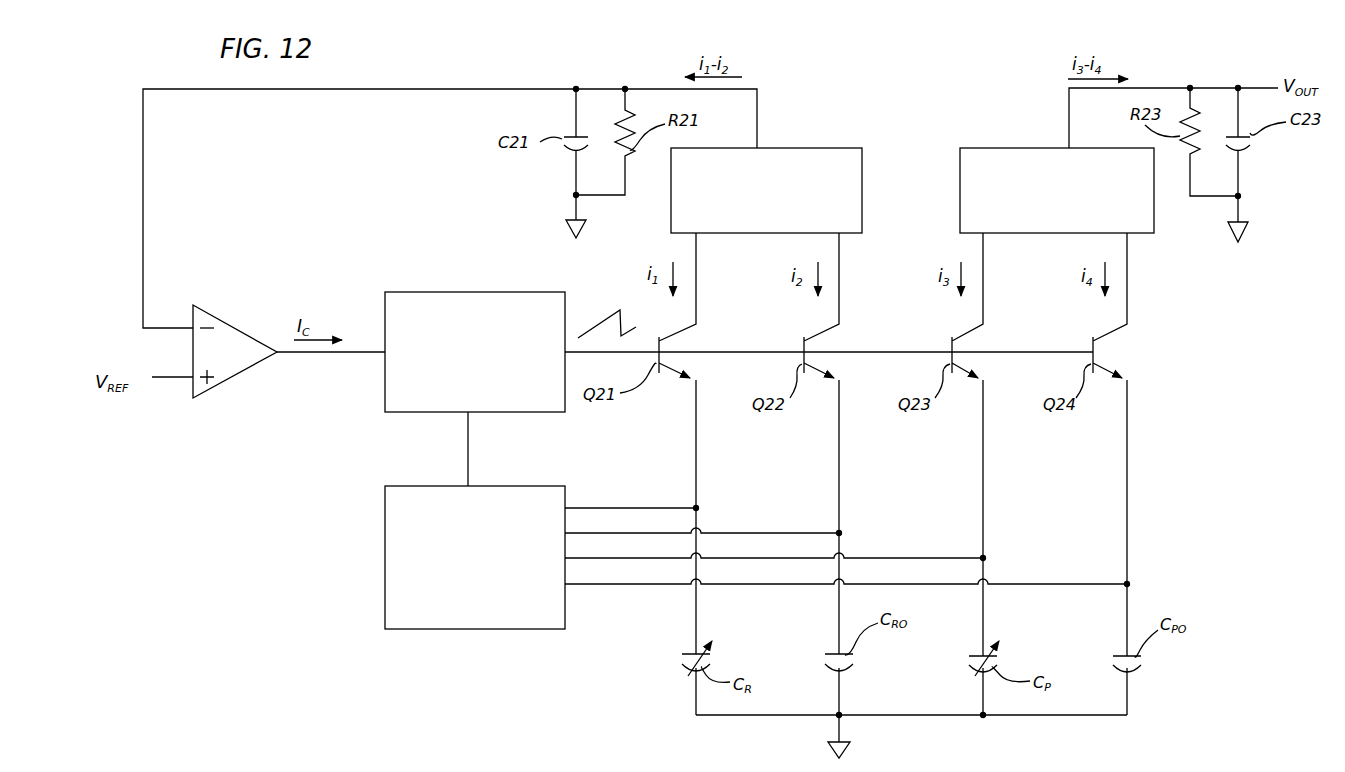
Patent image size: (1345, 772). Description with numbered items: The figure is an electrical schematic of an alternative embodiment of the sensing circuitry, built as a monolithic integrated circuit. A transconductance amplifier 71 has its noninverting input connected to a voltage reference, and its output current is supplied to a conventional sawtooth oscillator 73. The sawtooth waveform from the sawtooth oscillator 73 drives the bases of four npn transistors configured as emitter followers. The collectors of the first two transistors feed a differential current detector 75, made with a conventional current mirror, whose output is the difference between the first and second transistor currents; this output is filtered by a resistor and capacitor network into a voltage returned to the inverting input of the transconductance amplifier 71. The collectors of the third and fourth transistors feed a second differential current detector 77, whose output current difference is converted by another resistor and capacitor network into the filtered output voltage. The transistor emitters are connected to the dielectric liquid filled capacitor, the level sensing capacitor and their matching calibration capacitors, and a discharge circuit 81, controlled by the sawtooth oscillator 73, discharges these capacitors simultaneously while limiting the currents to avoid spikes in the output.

The transconductance amplifier 71 is at (222, 320).
The sawtooth oscillator 73 is at (505, 292).
The differential current detector 75 is at (862, 208).
The differential current detector 77 is at (960, 168).
The discharge circuit 81 is at (515, 486).